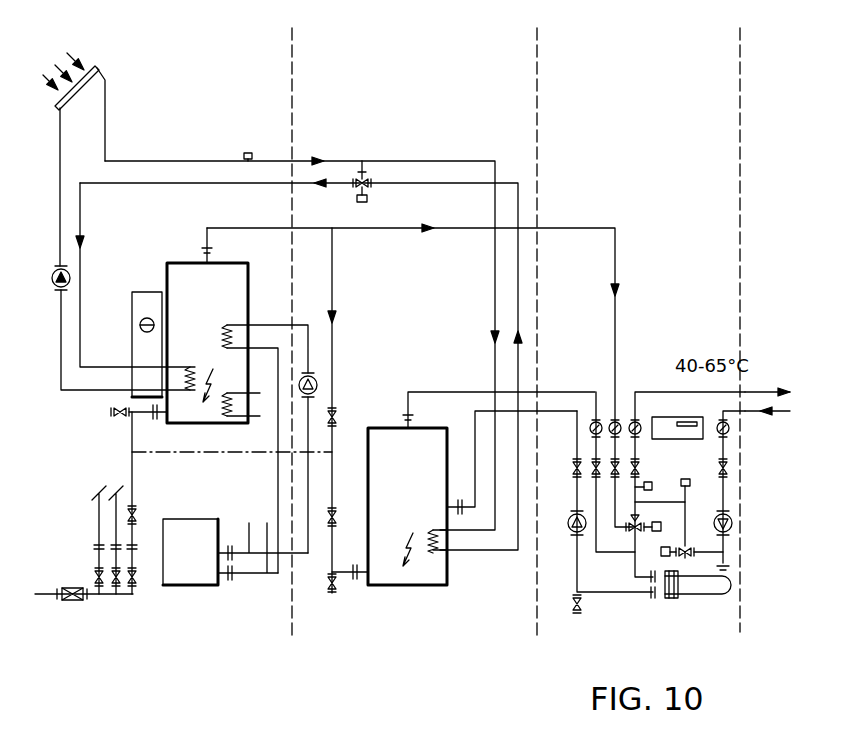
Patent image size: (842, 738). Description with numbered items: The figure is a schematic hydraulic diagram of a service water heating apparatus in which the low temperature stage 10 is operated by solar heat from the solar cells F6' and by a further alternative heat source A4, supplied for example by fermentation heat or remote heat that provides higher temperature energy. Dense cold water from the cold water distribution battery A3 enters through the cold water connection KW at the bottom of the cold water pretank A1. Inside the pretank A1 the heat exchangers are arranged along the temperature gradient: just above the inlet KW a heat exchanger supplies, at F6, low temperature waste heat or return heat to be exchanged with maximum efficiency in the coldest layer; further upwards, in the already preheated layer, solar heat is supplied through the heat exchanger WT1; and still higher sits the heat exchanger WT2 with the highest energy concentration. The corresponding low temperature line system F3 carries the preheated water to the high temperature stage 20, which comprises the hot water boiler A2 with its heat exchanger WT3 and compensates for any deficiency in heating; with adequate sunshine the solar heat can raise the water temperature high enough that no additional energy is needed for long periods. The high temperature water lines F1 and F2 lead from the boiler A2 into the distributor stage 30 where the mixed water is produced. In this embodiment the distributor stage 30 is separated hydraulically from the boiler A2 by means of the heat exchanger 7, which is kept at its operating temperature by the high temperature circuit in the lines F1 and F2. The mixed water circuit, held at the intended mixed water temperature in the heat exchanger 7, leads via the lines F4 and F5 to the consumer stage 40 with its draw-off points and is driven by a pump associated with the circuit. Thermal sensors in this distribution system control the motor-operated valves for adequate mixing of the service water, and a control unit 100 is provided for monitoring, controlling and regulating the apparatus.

The solar cells F6' is at (119, 206).
The l.t. stage 10 is at (197, 48).
The h.t. stage 20 is at (411, 48).
The distributor stage 30 is at (631, 48).
The consumer stage 40 is at (785, 48).
The cold water pretank A1 is at (213, 291).
The heat exchanger WT1 is at (124, 344).
The heat exchanger WT2 is at (269, 436).
The heat recovery means F6 is at (249, 392).
The cold water connection KW is at (126, 499).
The cold water distribution battery A3 is at (86, 543).
The alternative heat source A4 is at (198, 555).
The low temperature line system F3 is at (397, 230).
The hot water boiler A2 is at (413, 461).
The heat exchanger WT3 is at (465, 556).
The h.t. water line F1 is at (555, 411).
The h.t. water line F2 is at (558, 392).
The mixed water line F4 is at (647, 392).
The mixed water line F5 is at (757, 411).
The control unit 100 is at (663, 432).
The heat exchanger 7 is at (704, 588).